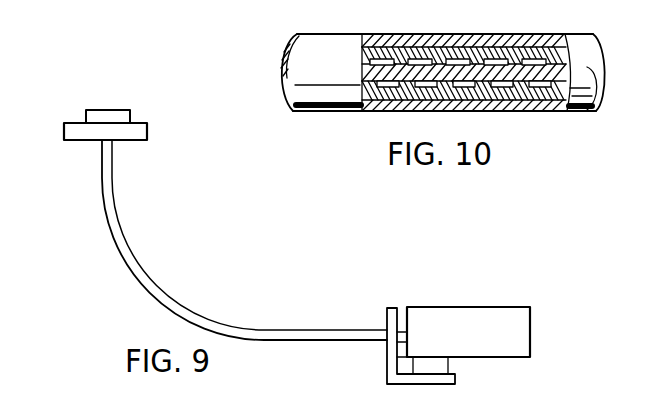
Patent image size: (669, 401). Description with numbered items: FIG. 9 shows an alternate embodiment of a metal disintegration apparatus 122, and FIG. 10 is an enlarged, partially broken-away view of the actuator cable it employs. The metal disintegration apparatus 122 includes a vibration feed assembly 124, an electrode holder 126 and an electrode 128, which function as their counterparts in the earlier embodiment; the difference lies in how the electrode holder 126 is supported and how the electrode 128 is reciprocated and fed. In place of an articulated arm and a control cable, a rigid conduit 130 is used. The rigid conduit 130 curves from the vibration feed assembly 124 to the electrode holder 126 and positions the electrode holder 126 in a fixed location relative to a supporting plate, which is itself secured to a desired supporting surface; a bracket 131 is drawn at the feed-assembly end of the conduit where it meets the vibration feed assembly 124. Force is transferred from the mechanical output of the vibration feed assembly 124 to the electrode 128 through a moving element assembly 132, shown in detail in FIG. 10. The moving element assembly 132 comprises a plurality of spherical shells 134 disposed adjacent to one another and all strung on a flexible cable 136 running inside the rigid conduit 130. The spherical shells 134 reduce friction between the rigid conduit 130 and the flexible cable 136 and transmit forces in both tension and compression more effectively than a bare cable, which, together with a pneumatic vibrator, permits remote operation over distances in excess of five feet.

In FIG. 9, the metal disintegration apparatus 122 is at (435, 324).
In FIG. 9, the vibration feed assembly 124 is at (465, 307).
In FIG. 9, the electrode holder 126 is at (145, 123).
In FIG. 9, the electrode 128 is at (107, 110).
In FIG. 9, the rigid conduit 130 is at (163, 290).
In FIG. 10, the rigid conduit 130 is at (537, 110).
In FIG. 9, the L-shaped bracket 131 is at (387, 360).
In FIG. 10, the moving element assembly 132 is at (443, 69).
In FIG. 10, the spherical shells 134 is at (398, 21).
In FIG. 10, the flexible cable 136 is at (360, 68).